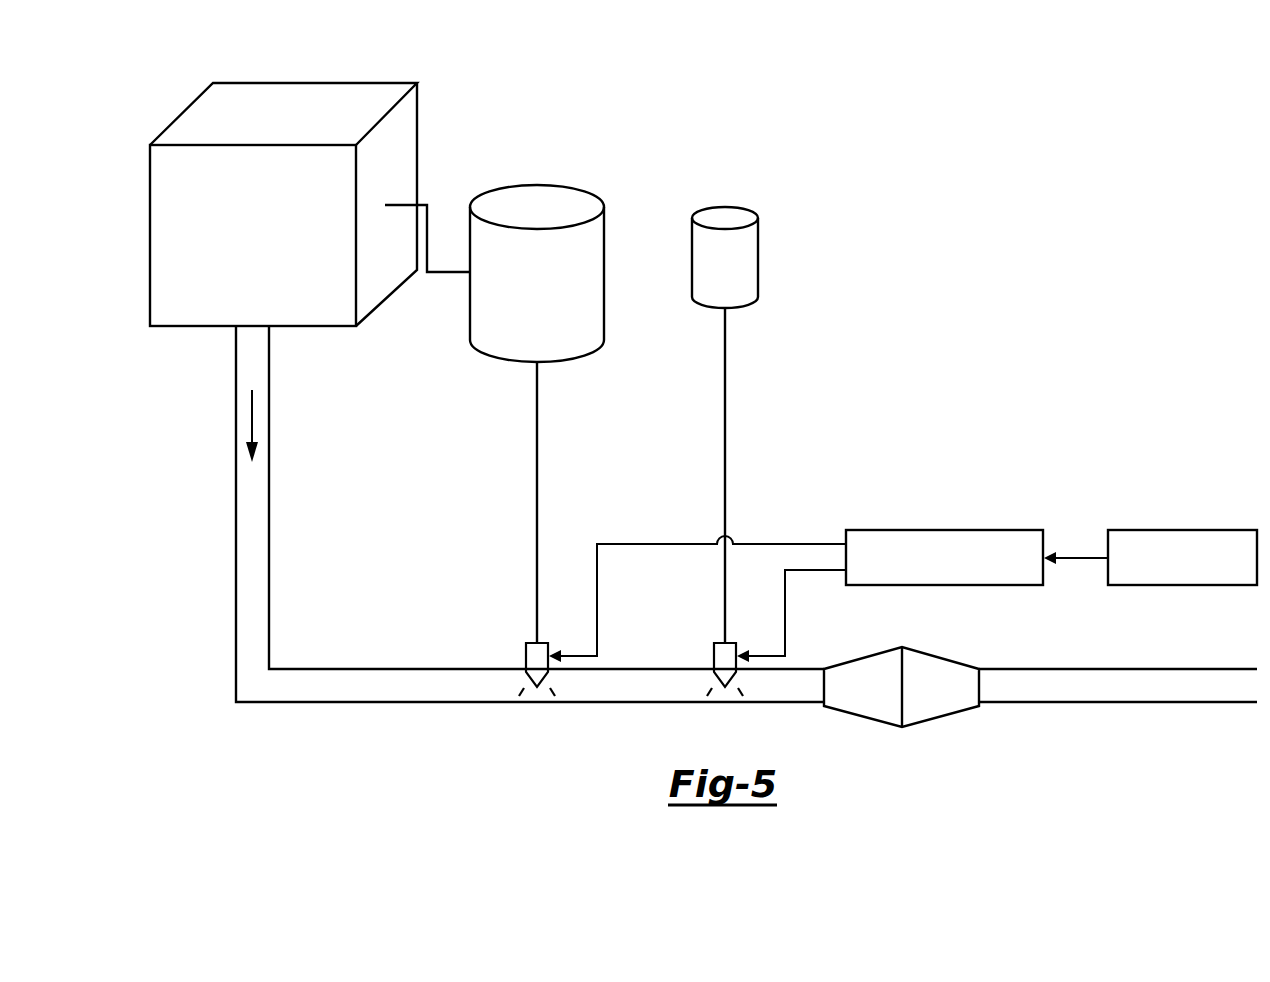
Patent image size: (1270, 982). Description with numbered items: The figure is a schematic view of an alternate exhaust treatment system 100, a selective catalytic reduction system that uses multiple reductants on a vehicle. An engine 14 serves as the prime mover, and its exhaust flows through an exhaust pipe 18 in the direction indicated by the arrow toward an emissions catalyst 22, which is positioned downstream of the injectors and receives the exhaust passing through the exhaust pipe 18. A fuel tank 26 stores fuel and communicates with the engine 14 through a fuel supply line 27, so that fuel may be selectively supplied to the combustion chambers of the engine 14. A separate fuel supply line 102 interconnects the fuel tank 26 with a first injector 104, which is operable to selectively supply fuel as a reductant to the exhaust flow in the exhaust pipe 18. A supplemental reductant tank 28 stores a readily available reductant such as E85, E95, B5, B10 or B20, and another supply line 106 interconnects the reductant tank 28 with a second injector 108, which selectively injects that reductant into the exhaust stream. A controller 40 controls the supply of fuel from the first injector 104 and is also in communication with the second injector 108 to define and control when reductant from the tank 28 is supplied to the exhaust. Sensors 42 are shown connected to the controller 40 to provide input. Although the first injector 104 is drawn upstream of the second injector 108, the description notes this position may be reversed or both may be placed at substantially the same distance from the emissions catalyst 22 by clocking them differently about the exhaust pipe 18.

The engine 14 is at (316, 99).
The exhaust pipe 18 is at (270, 500).
The emissions catalyst 22 is at (938, 720).
The fuel tank 26 is at (537, 200).
The fuel supply line 27 is at (441, 276).
The supplemental reductant tank 28 is at (724, 214).
The controller 40 is at (946, 528).
The sensors 42 is at (1185, 528).
The exhaust treatment system 100 is at (836, 172).
The fuel supply line 102 is at (536, 501).
The first injector 104 is at (524, 655).
The supply line 106 is at (727, 338).
The second injector 108 is at (711, 655).